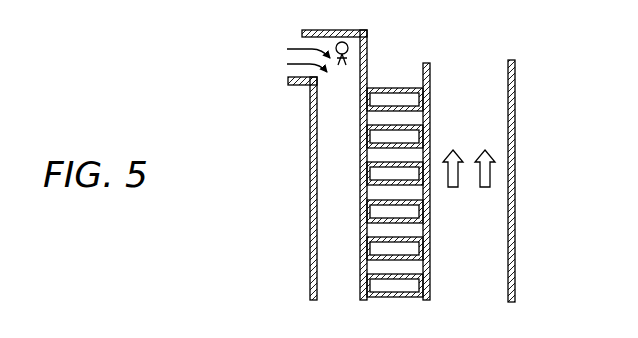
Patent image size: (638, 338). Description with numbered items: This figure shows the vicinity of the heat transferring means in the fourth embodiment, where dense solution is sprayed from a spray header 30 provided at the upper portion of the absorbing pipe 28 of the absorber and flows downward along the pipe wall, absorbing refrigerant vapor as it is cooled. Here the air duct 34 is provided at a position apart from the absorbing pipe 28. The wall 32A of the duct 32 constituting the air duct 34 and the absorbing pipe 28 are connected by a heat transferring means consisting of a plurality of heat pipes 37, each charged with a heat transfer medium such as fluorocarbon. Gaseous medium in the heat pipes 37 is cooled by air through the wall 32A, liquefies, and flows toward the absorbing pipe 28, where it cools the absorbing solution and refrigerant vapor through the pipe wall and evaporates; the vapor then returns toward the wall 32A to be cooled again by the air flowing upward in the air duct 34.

The absorbing pipe 28 is at (310, 152).
The spray header 30 is at (349, 47).
The duct 32 is at (515, 80).
The wall of the duct 32A is at (430, 80).
The air duct 34 is at (495, 108).
The heat pipe 37 is at (392, 64).